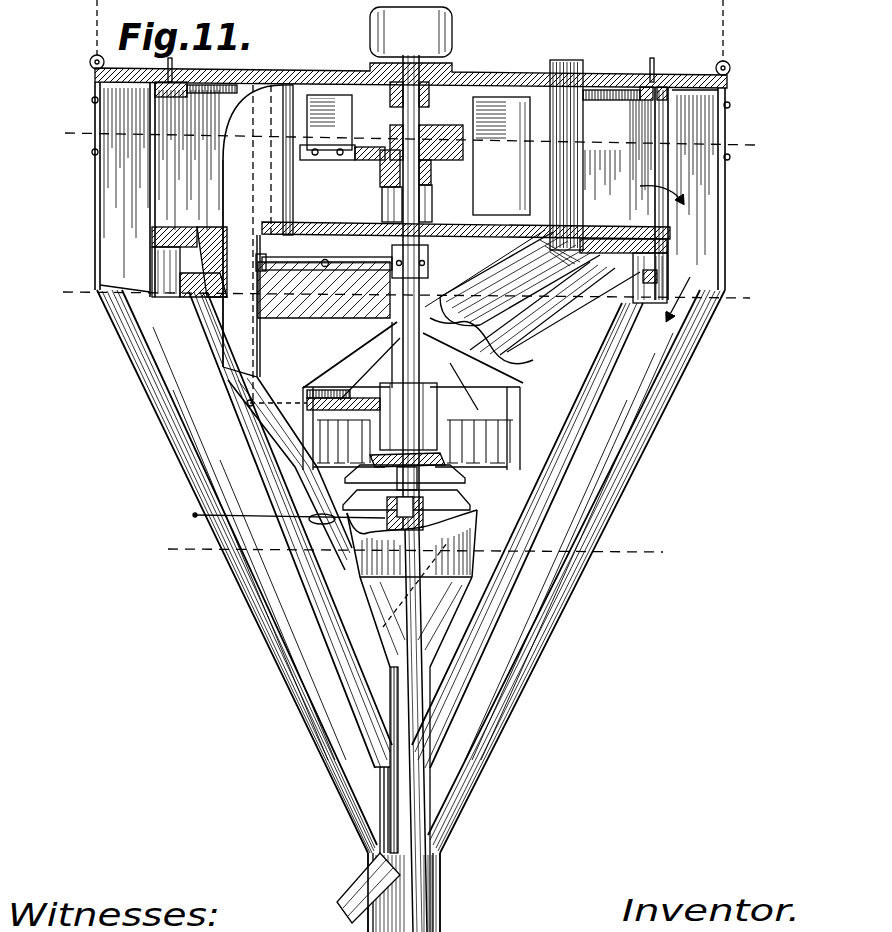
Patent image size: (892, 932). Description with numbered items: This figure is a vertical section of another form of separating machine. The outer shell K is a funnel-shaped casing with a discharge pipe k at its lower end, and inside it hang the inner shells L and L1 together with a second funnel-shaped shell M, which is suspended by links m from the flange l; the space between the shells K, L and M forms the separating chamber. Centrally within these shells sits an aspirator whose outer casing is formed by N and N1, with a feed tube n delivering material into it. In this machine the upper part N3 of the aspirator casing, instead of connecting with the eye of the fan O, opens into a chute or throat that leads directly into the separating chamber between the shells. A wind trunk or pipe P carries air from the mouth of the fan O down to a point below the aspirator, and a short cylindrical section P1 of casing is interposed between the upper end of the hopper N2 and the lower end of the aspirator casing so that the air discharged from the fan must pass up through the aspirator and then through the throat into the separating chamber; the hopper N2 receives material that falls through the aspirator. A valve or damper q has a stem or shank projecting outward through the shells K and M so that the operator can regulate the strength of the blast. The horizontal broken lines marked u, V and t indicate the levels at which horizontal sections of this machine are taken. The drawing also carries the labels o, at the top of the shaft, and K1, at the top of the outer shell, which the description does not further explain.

The cap on top of shaft o is at (411, 32).
The top plate of casing (K') K1 is at (411, 140).
The fan O is at (415, 152).
The feed tube n is at (435, 253).
The aspirator casing N1 is at (586, 155).
The inner shell L is at (423, 191).
The flange l is at (677, 250).
The wind trunk P is at (287, 327).
The inner shell L1 is at (463, 270).
The upper part of aspirator casing N3 is at (532, 297).
The aspirator casing N is at (385, 446).
The second funnel-shaped shell M is at (416, 612).
The outer shell K is at (410, 507).
The valve or damper q is at (306, 567).
The short cylindrical casing section P1 is at (422, 522).
The hopper N2 is at (412, 681).
The links m is at (373, 888).
The discharge pipe k is at (437, 910).
The section line v-v V is at (408, 143).
The section line u- u is at (405, 294).
The section line t- t is at (413, 553).